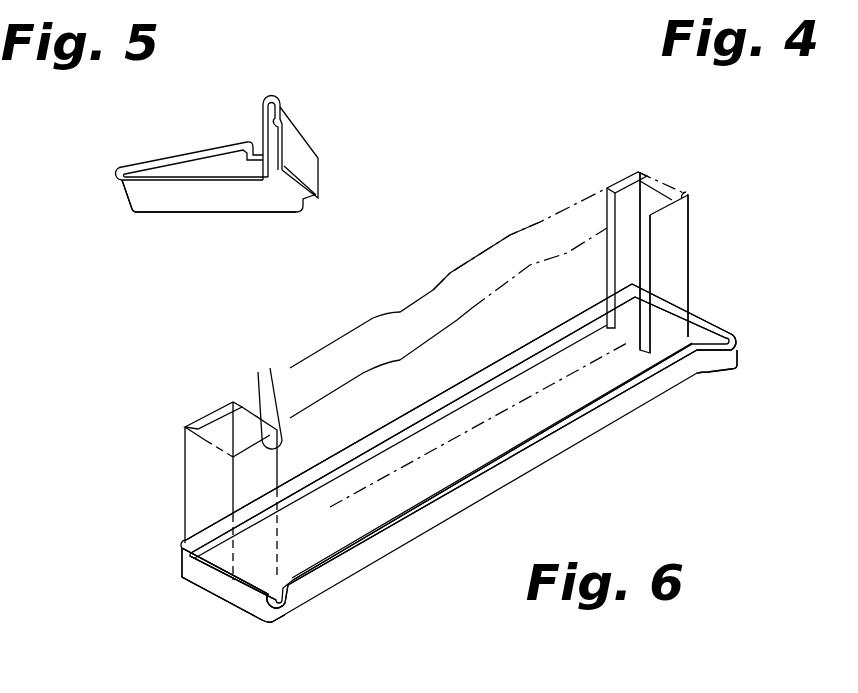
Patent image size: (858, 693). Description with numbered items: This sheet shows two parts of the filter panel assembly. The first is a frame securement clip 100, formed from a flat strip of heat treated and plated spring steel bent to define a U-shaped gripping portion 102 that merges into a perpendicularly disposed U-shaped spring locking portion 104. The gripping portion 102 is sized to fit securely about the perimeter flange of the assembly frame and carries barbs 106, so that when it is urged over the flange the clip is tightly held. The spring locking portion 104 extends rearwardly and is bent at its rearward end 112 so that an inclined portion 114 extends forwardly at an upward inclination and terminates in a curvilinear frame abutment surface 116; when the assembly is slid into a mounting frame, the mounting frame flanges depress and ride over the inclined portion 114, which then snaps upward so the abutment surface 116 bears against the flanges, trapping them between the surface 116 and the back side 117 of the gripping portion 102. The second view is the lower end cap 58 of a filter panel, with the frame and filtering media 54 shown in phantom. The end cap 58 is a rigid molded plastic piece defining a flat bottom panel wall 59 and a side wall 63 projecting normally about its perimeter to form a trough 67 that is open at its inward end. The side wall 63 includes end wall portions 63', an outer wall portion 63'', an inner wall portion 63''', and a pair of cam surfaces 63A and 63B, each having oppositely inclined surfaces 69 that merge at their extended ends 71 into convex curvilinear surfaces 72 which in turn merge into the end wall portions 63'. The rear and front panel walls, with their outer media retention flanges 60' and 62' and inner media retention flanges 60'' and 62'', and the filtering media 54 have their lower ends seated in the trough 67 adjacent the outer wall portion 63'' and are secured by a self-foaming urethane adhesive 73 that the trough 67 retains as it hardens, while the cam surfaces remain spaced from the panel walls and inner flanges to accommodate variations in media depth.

In FIG. 5, the securement clip 100 is at (187, 204).
In FIG. 5, the U-shaped gripping portion 102 is at (277, 96).
In FIG. 5, the U-shaped spring locking portion 104 is at (147, 193).
In FIG. 5, the barbs 106 is at (277, 120).
In FIG. 5, the rearward end 112 is at (116, 174).
In FIG. 5, the inclined portion 114 is at (160, 160).
In FIG. 5, the curvilinear frame abutment surface 116 is at (248, 154).
In FIG. 5, the back side of the gripping portion 117 is at (263, 128).
In FIG. 6, the filtering media 54 is at (658, 238).
In FIG. 6, the lower end cap 58 is at (533, 477).
In FIG. 6, the bottom panel wall 59 is at (450, 450).
In FIG. 6, the media retention flange 60' is at (623, 240).
In FIG. 6, the media retention flange 60'' is at (684, 243).
In FIG. 6, the media retention flange 62' is at (197, 472).
In FIG. 6, the media retention flange 62'' is at (242, 472).
In FIG. 6, the side wall 63 is at (410, 418).
In FIG. 6, the end wall portions 63' is at (460, 452).
In FIG. 6, the outer wall portion 63'' is at (203, 529).
In FIG. 6, the inner wall portion 63''' is at (492, 464).
In FIG. 6, the cam surface 63A is at (737, 352).
In FIG. 6, the cam surface 63B is at (280, 623).
In FIG. 6, the trough 67 is at (580, 330).
In FIG. 6, the oppositely inclined surfaces 69 is at (283, 592).
In FIG. 6, the extended ends 71 is at (290, 595).
In FIG. 6, the convex curvilinear surfaces 72 is at (287, 620).
In FIG. 6, the adhesive 73 is at (503, 423).